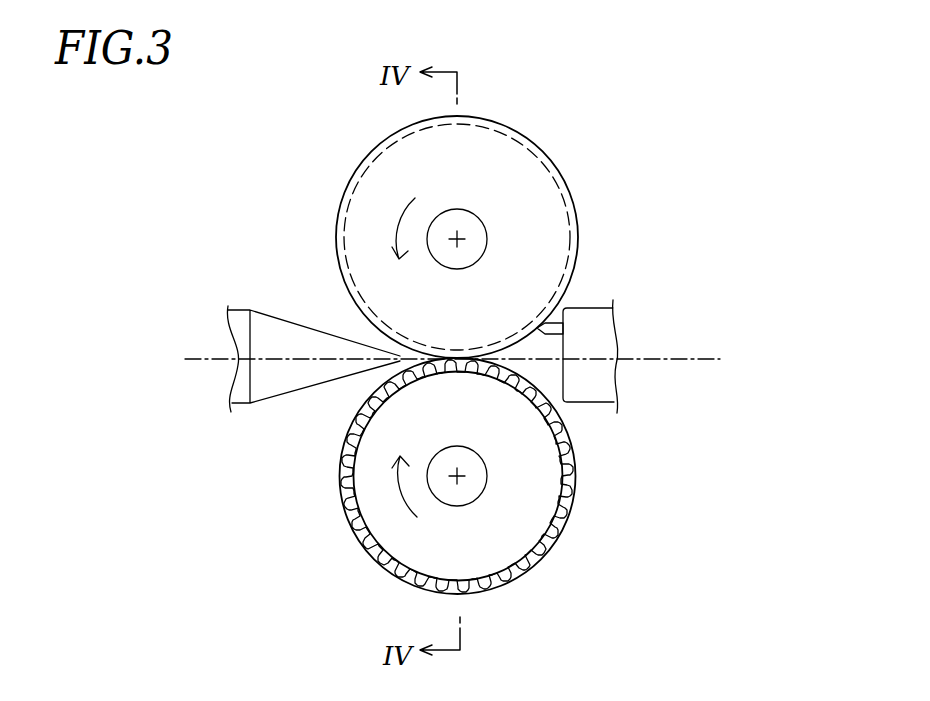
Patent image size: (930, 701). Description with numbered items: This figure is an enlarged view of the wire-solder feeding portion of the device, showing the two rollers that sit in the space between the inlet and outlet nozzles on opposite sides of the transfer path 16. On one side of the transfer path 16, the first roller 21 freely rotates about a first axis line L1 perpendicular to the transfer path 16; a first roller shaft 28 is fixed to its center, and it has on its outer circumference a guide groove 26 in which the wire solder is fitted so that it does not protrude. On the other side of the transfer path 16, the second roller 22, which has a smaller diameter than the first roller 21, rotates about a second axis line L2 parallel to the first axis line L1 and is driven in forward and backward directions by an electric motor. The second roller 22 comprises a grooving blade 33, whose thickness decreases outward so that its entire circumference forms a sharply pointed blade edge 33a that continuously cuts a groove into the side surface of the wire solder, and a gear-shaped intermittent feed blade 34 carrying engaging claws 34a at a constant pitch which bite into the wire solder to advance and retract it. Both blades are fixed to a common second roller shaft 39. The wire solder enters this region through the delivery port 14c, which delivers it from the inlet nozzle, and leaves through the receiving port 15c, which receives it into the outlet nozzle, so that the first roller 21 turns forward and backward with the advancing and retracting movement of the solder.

The first roller 21 is at (553, 133).
The second roller 22 is at (529, 583).
The guide groove 26 is at (346, 189).
The first roller shaft 28 is at (450, 223).
The first axis line L1 is at (461, 234).
The second axis line L2 is at (460, 478).
The grooving blade 33 is at (350, 443).
The blade edge 33a is at (341, 482).
The feed blade 34 is at (347, 520).
The engaging claws 34a is at (380, 567).
The second roller shaft 39 is at (468, 462).
The delivery port 14c is at (277, 330).
The receiving port 15c is at (590, 332).
The transfer path 16 is at (670, 354).